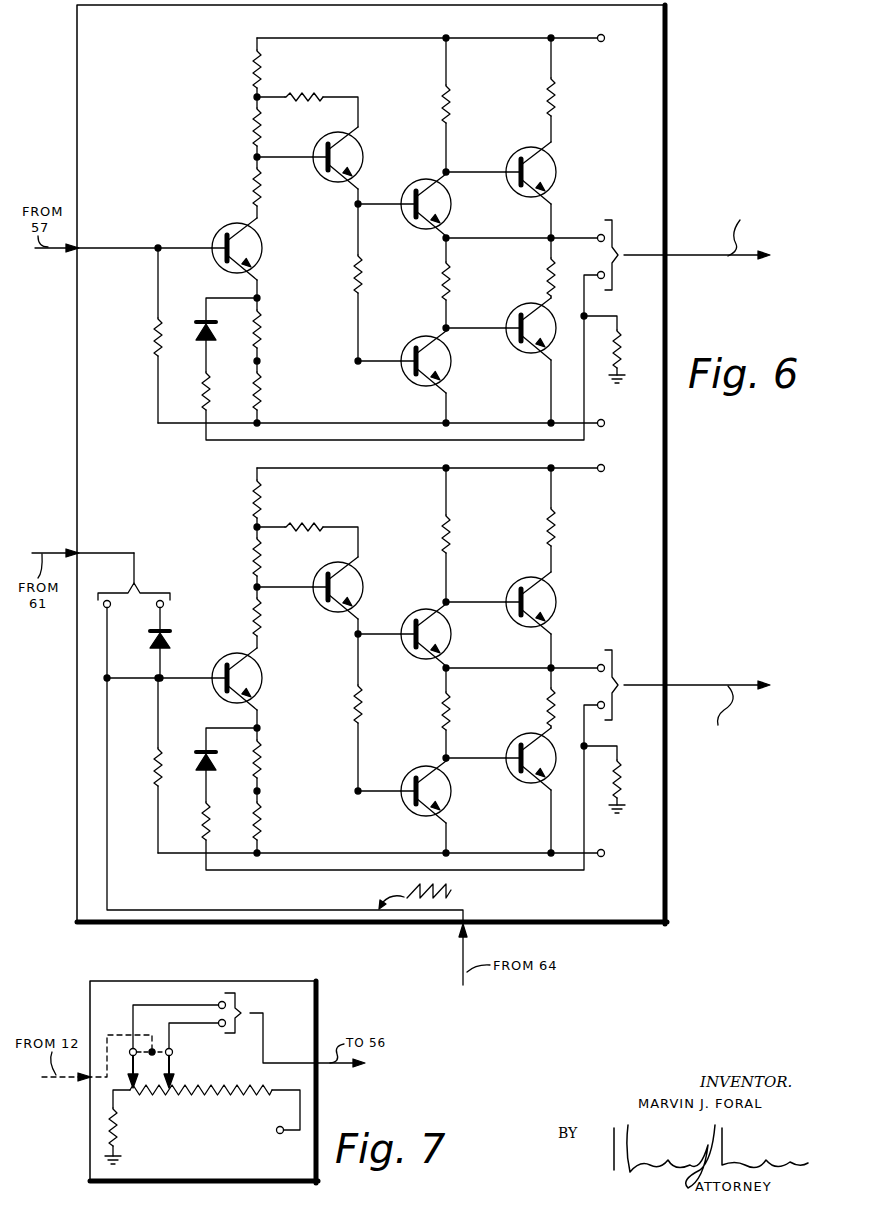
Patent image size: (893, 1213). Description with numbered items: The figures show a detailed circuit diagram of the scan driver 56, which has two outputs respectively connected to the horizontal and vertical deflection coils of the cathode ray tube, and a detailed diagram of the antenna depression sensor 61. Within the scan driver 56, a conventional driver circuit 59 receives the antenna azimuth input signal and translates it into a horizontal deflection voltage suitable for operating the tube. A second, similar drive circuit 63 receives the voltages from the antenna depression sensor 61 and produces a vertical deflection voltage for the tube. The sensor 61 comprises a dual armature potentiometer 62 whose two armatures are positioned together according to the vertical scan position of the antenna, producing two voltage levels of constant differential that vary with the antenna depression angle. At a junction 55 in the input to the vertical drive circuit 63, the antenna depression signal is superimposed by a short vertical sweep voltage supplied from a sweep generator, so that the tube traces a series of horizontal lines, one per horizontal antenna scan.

In FIG. 6, the scan driver 56 is at (665, 530).
In FIG. 6, the driver circuit 59 is at (500, 282).
In FIG. 6, the drive circuit 63 is at (504, 712).
In FIG. 6, the junction 55 is at (153, 682).
In FIG. 7, the antenna depression sensor 61 is at (166, 981).
In FIG. 7, the dual armature potentiometer 62 is at (157, 1100).